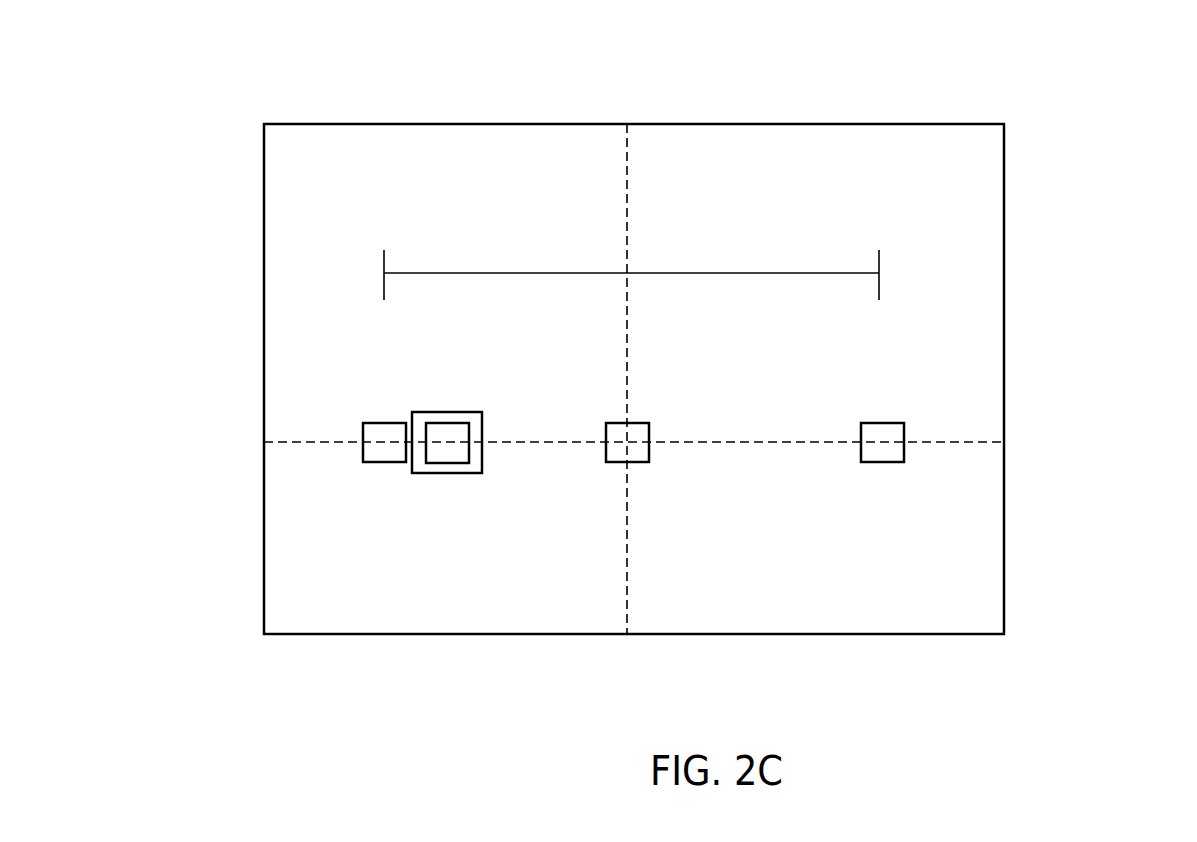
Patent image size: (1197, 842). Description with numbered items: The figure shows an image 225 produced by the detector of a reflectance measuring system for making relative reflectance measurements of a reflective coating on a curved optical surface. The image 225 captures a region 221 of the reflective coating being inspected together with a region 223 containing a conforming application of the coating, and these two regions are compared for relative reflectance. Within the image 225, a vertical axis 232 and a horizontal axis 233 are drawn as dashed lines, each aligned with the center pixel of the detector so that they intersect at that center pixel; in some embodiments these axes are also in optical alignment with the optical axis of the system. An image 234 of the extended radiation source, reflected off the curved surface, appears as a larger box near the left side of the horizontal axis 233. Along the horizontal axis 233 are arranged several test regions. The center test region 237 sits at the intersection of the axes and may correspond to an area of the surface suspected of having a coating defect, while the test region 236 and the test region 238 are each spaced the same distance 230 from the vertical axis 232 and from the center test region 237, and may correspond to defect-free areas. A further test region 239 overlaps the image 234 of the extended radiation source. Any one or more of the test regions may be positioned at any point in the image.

The region of the reflective coating for inspection 221 is at (330, 186).
The region including a conforming application of the reflective coating 223 is at (823, 167).
The image 225 is at (1038, 113).
The distance 230 is at (536, 273).
The vertical axis 232 is at (625, 192).
The horizontal axis 233 is at (548, 440).
The image of the extended radiation source 234 is at (433, 412).
The test region 236 is at (360, 433).
The center test region 237 is at (607, 423).
The test region 238 is at (905, 423).
The test region 239 is at (430, 464).